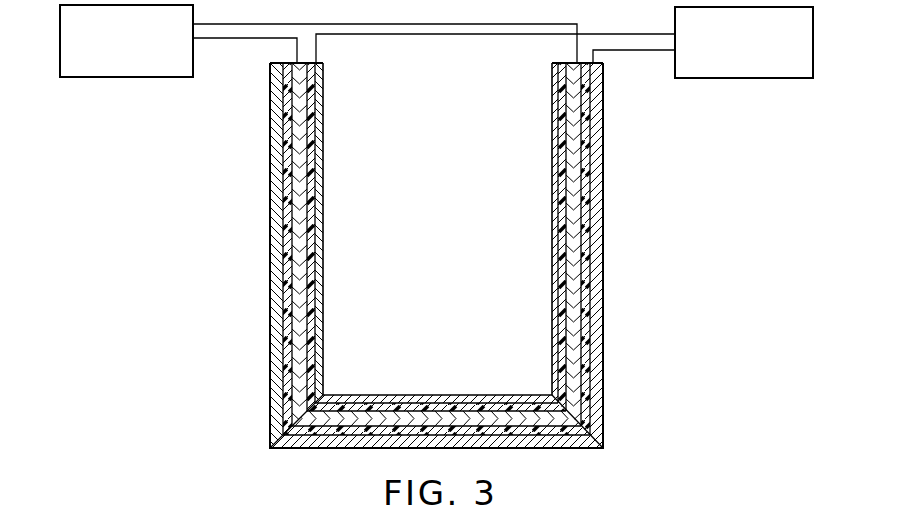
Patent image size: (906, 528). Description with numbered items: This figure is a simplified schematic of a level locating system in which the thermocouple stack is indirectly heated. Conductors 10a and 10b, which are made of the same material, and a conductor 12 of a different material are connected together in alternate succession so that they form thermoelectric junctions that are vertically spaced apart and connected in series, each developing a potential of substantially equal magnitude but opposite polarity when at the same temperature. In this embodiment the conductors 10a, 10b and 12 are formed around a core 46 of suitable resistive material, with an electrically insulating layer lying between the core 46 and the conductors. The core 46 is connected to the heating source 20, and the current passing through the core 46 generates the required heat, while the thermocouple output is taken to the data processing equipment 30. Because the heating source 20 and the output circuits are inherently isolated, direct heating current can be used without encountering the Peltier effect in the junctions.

The heating source 20 is at (163, 77).
The data processing equipment 30 is at (737, 78).
The conductor 10a is at (318, 137).
The conductor 10b is at (278, 402).
The conductor 12 is at (439, 255).
The core 46 is at (596, 273).